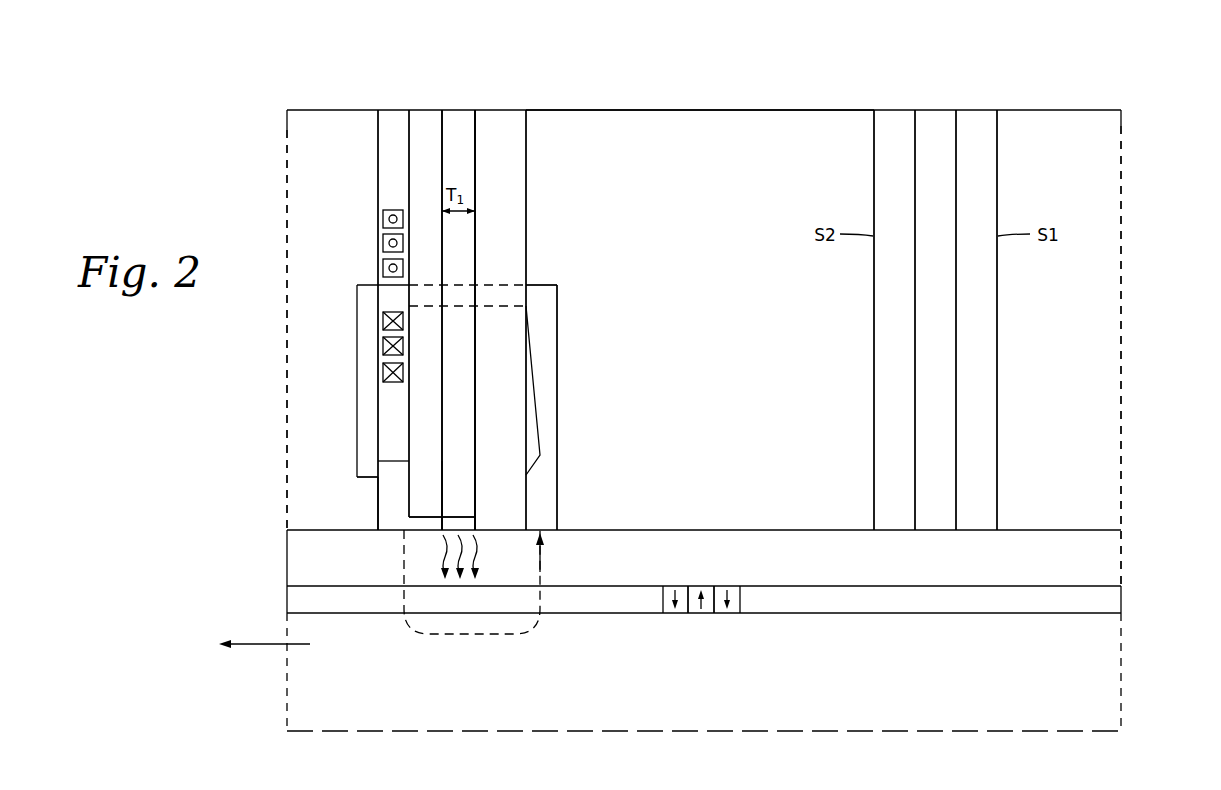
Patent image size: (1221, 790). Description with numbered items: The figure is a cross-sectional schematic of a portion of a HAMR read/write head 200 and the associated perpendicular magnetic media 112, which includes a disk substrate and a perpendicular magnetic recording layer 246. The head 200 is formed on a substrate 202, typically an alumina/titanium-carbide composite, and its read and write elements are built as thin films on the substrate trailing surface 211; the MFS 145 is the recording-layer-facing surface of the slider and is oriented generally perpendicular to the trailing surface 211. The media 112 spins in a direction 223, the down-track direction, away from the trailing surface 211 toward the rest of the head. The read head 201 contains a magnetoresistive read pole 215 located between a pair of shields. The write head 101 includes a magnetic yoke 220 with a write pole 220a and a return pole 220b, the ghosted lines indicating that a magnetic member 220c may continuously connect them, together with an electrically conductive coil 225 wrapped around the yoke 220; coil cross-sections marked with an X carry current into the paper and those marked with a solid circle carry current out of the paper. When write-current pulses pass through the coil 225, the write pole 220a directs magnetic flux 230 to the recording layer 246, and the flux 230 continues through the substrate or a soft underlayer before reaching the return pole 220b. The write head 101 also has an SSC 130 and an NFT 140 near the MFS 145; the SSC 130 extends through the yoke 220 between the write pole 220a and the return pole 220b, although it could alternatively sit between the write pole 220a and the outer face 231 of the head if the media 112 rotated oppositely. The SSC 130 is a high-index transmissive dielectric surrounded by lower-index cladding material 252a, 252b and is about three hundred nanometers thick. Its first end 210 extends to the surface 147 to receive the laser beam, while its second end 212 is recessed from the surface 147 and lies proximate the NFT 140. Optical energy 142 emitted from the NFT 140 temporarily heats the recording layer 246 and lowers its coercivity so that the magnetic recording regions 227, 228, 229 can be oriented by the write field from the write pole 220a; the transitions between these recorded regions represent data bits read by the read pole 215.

The read/write head 200 is at (268, 116).
The write head 101 is at (377, 56).
The cladding material 252a is at (416, 119).
The SSC 130 is at (453, 119).
The first end 210 is at (467, 119).
The cladding material 252b is at (517, 119).
The surface 147 is at (664, 110).
The read head 201 is at (1003, 56).
The substrate trailing surface 211 is at (990, 140).
The magnetoresistive read pole 215 is at (935, 492).
The magnetic yoke 220 is at (357, 299).
The write pole 220a is at (378, 518).
The return pole 220b is at (558, 501).
The magnetic member 220c is at (548, 284).
The electrically conductive coil 225 is at (370, 210).
The NFT 140 is at (458, 524).
The second end 212 is at (462, 516).
The outer face 231 is at (296, 448).
The substrate 202 is at (1112, 450).
The MFS 145 is at (1080, 536).
The perpendicular magnetic recording layer 246 is at (296, 602).
The optical energy 142 is at (435, 558).
The magnetic flux 230 is at (464, 635).
The magnetic recording region 228 is at (668, 616).
The magnetic recording region 227 is at (695, 616).
The magnetic recording region 229 is at (733, 616).
The direction 223 is at (257, 648).
The perpendicular magnetic media 112 is at (290, 710).